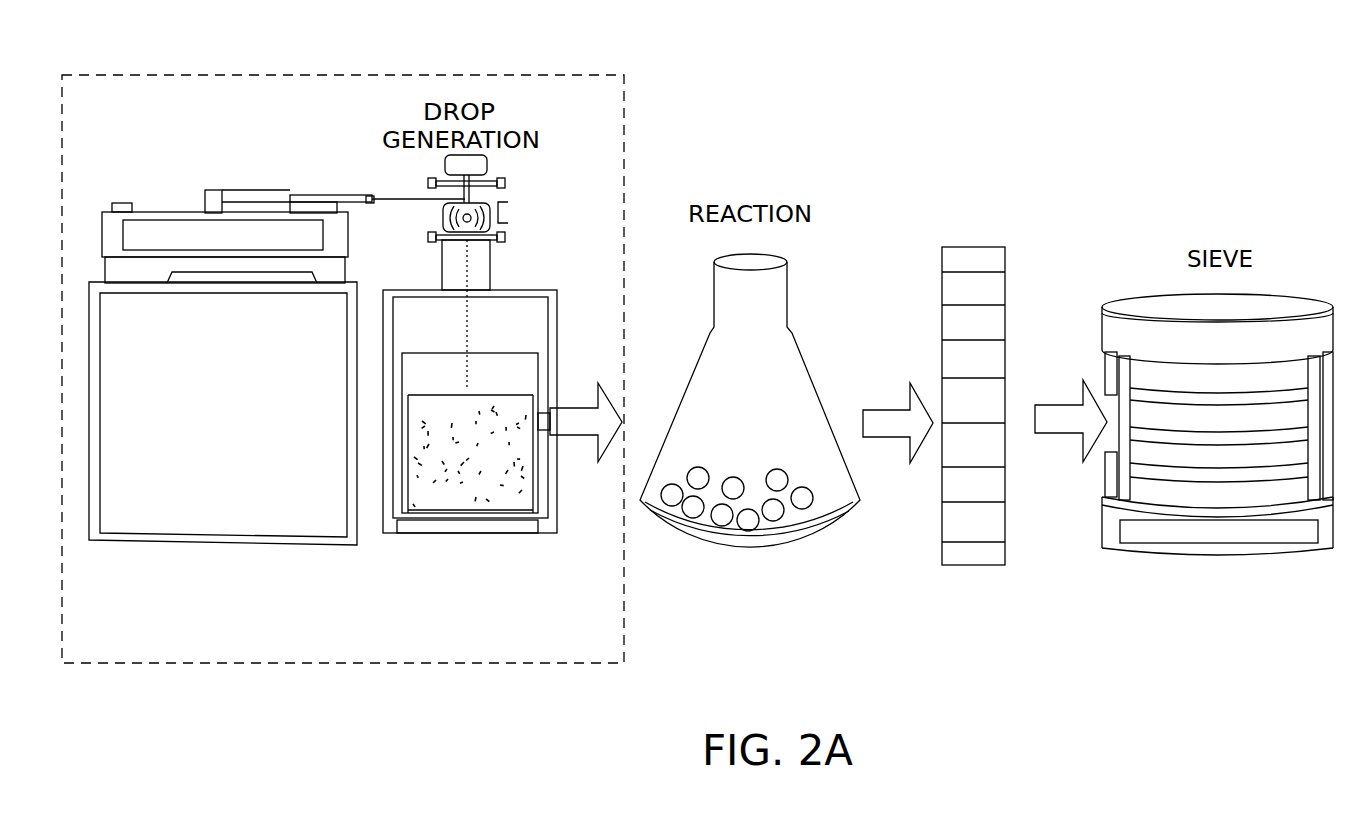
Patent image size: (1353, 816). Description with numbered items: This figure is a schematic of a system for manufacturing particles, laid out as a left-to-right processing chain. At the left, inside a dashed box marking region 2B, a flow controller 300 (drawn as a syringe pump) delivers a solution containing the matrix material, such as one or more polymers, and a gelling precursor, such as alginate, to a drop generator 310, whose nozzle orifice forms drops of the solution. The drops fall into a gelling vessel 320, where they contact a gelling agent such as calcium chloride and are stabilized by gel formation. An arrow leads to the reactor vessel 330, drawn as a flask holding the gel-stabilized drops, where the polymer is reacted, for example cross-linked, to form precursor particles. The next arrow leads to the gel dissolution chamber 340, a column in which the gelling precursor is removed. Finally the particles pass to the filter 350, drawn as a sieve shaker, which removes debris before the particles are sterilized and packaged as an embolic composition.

The region 2B is at (238, 75).
The flow controller 300 is at (168, 212).
The drop generator 310 is at (480, 273).
The gelling vessel 320 is at (473, 495).
The reactor vessel 330 is at (767, 528).
The gel dissolution chamber 340 is at (995, 520).
The filter 350 is at (1220, 556).